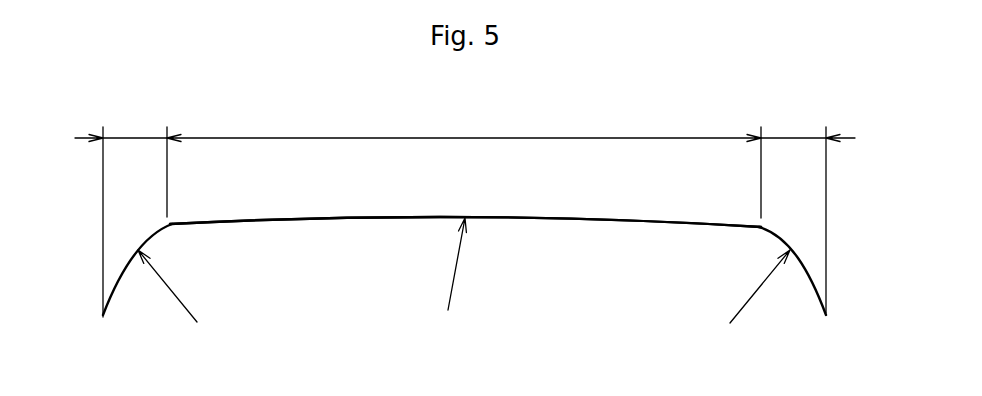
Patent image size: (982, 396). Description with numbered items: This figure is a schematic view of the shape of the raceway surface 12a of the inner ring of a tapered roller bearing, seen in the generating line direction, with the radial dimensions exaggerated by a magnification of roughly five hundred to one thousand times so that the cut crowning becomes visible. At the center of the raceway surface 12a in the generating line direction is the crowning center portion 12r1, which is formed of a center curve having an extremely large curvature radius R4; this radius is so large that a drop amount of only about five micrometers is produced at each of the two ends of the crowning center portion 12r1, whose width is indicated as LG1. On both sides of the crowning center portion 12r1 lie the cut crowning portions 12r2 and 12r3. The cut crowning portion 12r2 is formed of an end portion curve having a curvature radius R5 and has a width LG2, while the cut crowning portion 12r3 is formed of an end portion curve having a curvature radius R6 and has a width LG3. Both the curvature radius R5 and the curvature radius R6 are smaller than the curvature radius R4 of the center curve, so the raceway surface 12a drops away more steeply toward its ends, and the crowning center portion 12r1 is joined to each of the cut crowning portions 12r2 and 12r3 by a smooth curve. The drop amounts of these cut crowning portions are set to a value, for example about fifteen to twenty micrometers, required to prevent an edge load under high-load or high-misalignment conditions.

The width of crowning center portion LG1 is at (467, 133).
The width of cut crowning portion 12r2 LG2 is at (792, 133).
The width of cut crowning portion 12r3 LG3 is at (137, 133).
The raceway surface 12a is at (350, 217).
The crowning center portion 12r1 is at (505, 217).
The cut crowning portion 12r2 is at (802, 257).
The cut crowning portion 12r3 is at (128, 257).
The curvature radius of center curve R4 is at (453, 272).
The curvature radius of end portion curve C2 R5 is at (750, 300).
The curvature radius of end portion curve C3 R6 is at (172, 287).